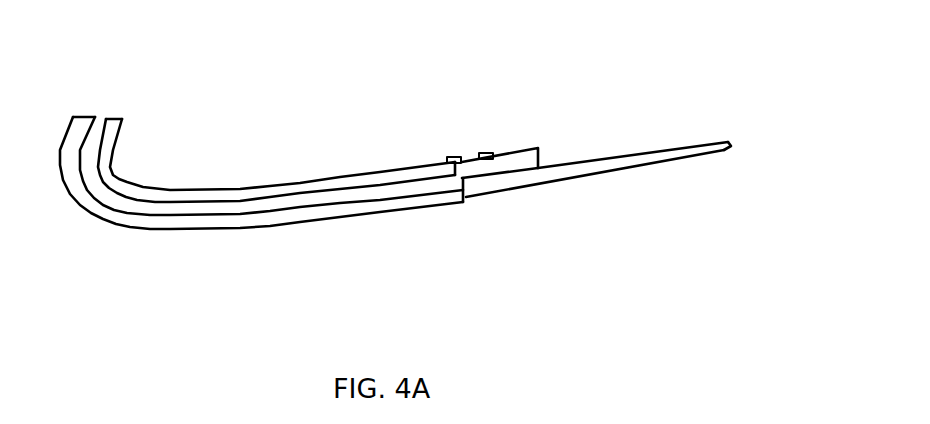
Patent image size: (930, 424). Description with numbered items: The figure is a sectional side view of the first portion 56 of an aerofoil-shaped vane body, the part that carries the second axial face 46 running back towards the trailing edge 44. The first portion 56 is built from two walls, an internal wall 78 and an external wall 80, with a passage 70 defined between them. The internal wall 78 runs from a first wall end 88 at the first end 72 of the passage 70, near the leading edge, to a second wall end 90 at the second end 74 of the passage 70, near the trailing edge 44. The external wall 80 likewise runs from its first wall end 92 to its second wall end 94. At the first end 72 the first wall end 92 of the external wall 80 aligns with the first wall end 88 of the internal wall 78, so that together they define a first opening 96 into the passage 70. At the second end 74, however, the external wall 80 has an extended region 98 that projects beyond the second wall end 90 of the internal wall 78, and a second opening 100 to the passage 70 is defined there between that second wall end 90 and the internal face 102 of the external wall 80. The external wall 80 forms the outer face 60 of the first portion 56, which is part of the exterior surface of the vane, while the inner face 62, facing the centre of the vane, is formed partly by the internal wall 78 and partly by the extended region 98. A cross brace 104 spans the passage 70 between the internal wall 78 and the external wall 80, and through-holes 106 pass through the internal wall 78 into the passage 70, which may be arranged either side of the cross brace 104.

The trailing edge 44 is at (730, 144).
The second axial face 46 is at (379, 214).
The first portion 56 is at (552, 63).
The outer face 60 is at (356, 250).
The inner face 62 is at (330, 140).
The passage 70 is at (182, 210).
The first end 72 is at (103, 130).
The second end 74 is at (522, 171).
The internal wall 78 is at (240, 189).
The external wall 80 is at (247, 222).
The first wall end 88 is at (128, 118).
The second wall end 90 is at (535, 150).
The first wall end 92 is at (78, 113).
The second wall end 94 is at (729, 149).
The first opening 96 is at (112, 116).
The extended region 98 is at (641, 170).
The second opening 100 is at (540, 160).
The internal face 102 is at (600, 158).
The cross brace 104 is at (464, 200).
The through-holes 106 is at (484, 153).